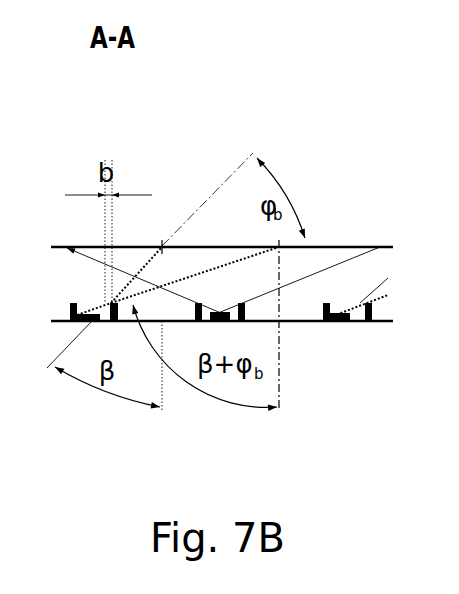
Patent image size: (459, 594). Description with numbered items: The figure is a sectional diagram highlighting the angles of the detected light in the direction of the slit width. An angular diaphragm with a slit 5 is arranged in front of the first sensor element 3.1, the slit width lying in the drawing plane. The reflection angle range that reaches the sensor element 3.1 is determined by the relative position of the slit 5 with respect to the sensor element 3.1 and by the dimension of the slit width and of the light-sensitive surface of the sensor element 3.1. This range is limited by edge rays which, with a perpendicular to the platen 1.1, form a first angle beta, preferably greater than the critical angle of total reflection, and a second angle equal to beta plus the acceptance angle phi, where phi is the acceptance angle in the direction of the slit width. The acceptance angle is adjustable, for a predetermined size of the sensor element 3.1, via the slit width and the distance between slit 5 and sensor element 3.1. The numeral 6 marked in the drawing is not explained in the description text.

The platen 1.1 is at (380, 245).
The slit 5 is at (111, 303).
The aperture opening 6 is at (92, 303).
The sensor element 3.1 is at (342, 321).